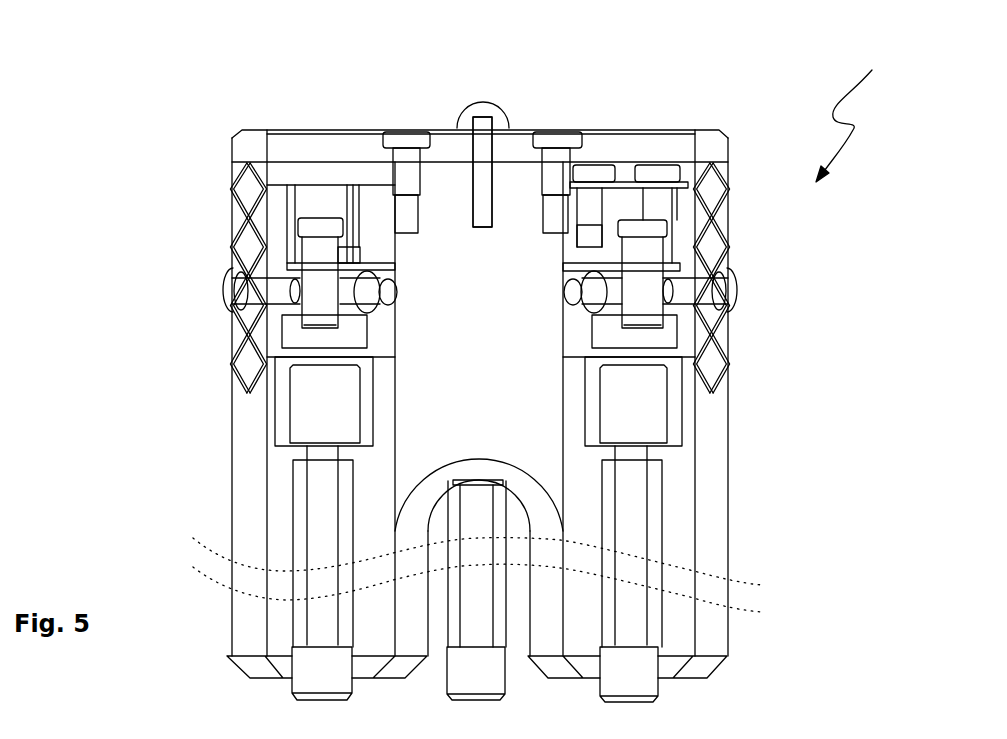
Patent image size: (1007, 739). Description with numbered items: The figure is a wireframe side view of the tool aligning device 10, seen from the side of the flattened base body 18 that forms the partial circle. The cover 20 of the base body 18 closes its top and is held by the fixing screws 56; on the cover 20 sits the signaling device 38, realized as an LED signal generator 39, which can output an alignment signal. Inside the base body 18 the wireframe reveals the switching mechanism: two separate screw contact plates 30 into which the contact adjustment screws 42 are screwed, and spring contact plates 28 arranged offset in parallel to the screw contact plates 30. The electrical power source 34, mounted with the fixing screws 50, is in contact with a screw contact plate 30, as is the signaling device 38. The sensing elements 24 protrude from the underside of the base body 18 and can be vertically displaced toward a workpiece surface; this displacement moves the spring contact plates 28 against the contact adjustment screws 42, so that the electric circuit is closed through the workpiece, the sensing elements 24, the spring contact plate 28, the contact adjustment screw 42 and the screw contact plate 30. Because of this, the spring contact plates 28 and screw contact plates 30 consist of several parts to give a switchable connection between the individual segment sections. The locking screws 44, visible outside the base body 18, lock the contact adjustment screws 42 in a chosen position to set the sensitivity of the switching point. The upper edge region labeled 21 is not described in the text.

The tool aligning device 10 is at (858, 113).
The base body 18 is at (240, 443).
The cover 20 is at (243, 150).
The cover plate 21 is at (310, 128).
The sensing elements 24 is at (322, 498).
The spring contact plates 28 is at (290, 357).
The screw contact plates 30 is at (290, 270).
The electrical power source 34 is at (628, 205).
The signaling device 38 is at (485, 110).
The LED signal generator 39 is at (482, 172).
The contact adjustment screws 42 is at (300, 227).
The locking screws 44 is at (232, 292).
The fixing screws 50 is at (596, 172).
The fixing screws 56 is at (401, 143).